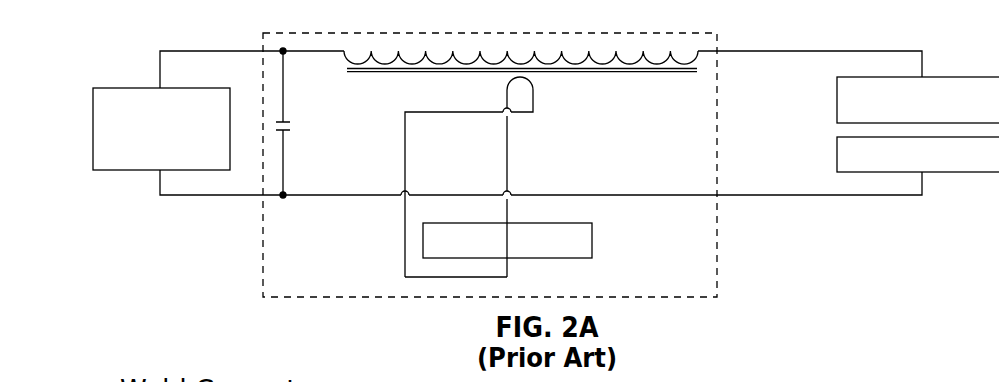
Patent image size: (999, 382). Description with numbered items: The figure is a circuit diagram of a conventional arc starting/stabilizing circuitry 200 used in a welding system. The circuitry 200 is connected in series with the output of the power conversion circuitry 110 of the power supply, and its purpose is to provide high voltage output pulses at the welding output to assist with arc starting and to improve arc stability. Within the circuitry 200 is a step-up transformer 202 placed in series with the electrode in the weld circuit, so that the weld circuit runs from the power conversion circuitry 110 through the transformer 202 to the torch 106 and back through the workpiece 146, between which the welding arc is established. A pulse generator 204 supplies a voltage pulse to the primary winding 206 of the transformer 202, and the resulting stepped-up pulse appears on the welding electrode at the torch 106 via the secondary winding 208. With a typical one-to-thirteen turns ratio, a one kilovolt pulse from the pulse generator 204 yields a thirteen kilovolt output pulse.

The conventional arc starting/stabilizing circuitry 200 is at (262, 33).
The power conversion circuitry 110 is at (93, 88).
The secondary winding 208 is at (378, 76).
The step-up transformer 202 is at (392, 117).
The primary winding 206 is at (541, 88).
The pulse generator 204 is at (583, 223).
The welding torch 106 is at (993, 110).
The workpiece 146 is at (993, 163).